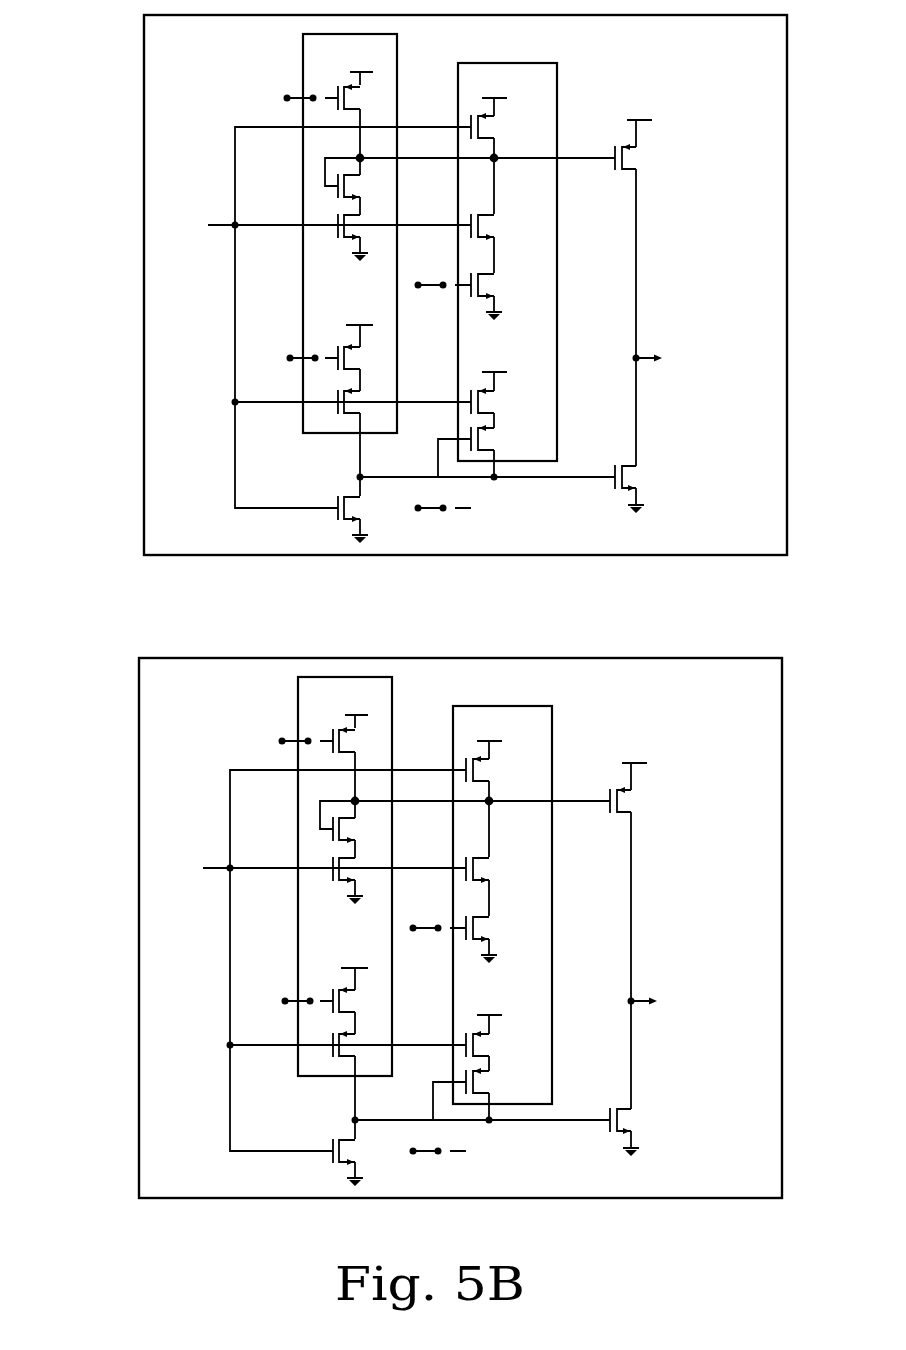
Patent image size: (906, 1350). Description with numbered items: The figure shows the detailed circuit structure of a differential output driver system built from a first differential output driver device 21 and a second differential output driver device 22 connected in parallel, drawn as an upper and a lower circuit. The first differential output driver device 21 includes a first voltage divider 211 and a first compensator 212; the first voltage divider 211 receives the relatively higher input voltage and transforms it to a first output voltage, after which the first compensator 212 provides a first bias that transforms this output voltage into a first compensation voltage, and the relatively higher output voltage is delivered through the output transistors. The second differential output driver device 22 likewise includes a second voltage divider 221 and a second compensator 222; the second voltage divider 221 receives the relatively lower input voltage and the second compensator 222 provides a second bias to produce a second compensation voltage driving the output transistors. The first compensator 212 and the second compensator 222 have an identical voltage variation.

The first differential output driver device 21 is at (426, 311).
The second differential output driver device 22 is at (421, 954).
The first voltage divider 211 is at (303, 112).
The first compensator 212 is at (547, 108).
The second voltage divider 221 is at (226, 876).
The second compensator 222 is at (517, 921).